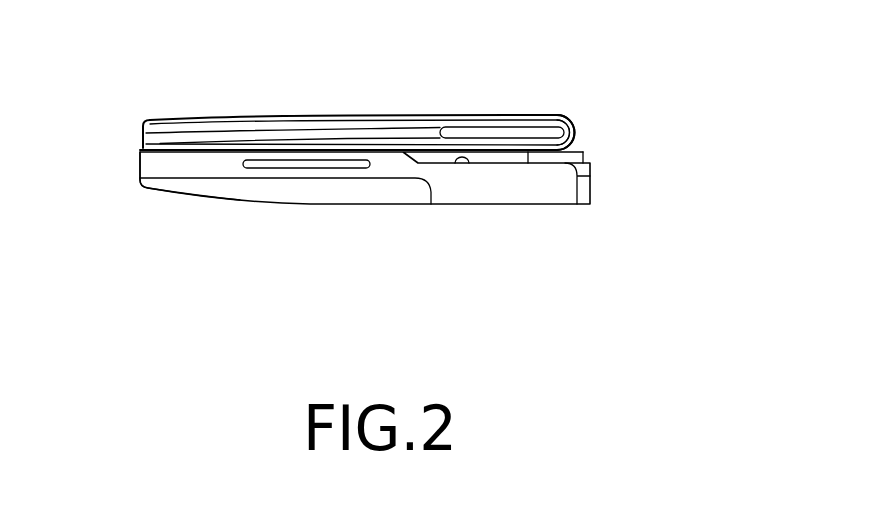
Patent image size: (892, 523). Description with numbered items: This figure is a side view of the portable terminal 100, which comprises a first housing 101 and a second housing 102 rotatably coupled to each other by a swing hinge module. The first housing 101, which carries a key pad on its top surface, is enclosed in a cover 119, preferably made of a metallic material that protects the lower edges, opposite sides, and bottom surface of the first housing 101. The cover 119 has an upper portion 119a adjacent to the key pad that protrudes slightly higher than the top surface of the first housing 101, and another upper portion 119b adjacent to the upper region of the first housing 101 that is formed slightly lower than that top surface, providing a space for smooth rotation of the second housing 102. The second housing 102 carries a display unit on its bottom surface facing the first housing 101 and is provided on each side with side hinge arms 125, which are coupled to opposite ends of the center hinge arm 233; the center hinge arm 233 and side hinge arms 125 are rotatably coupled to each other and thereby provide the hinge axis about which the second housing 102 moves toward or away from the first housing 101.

The portable terminal 100 is at (148, 28).
The second housing 102 is at (403, 83).
The side hinge arm 125 is at (543, 116).
The center hinge arm 233 is at (576, 119).
The first housing 101 is at (370, 233).
The cover 119 is at (554, 199).
The upper portion of the cover 119a is at (208, 147).
The another upper portion of the cover 119b is at (456, 162).